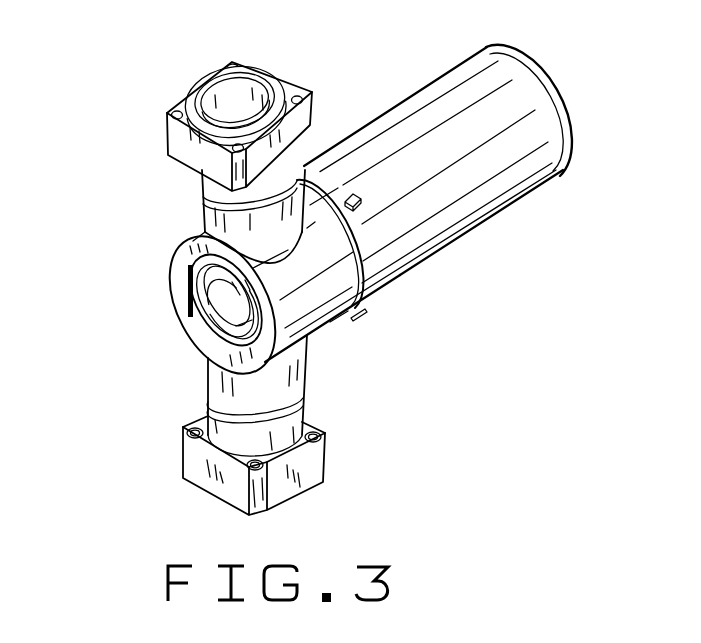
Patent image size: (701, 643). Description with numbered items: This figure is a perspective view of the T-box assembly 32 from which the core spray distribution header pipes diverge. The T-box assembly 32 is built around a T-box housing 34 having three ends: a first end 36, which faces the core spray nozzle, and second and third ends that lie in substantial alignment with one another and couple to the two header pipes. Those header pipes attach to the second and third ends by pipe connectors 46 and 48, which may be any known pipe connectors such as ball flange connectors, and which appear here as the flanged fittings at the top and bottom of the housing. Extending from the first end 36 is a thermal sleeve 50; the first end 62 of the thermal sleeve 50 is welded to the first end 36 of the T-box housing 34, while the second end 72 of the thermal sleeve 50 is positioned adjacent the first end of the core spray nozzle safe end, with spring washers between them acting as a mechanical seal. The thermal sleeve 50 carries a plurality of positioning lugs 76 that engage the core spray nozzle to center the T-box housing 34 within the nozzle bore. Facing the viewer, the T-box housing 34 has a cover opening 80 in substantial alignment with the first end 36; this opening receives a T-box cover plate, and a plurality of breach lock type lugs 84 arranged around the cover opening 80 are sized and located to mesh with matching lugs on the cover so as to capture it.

The T-box assembly 32 is at (130, 301).
The T-box housing 34 is at (317, 327).
The first end 36 is at (360, 266).
The pipe connector 46 is at (312, 115).
The pipe connector 48 is at (323, 463).
The thermal sleeve 50 is at (430, 103).
The first end 62 is at (390, 273).
The second end 72 is at (551, 165).
The positioning lugs 76 is at (357, 194).
The cover opening 80 is at (337, 318).
The breach lock type lugs 84 is at (207, 286).